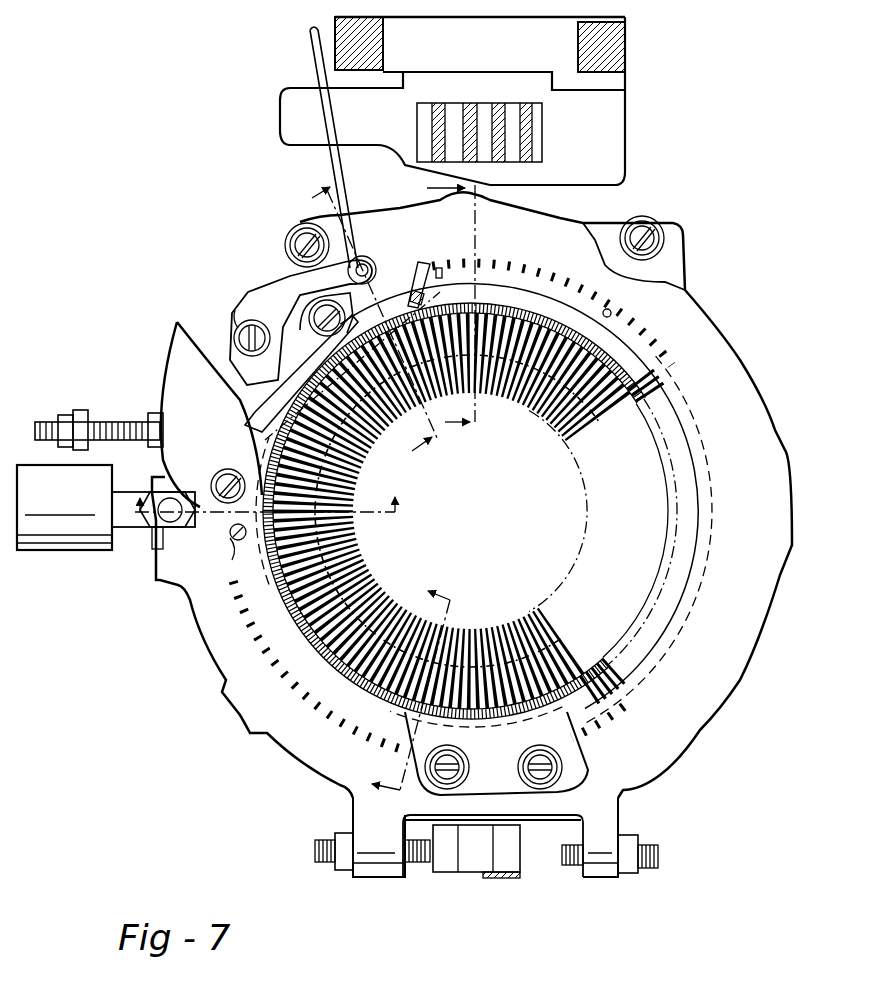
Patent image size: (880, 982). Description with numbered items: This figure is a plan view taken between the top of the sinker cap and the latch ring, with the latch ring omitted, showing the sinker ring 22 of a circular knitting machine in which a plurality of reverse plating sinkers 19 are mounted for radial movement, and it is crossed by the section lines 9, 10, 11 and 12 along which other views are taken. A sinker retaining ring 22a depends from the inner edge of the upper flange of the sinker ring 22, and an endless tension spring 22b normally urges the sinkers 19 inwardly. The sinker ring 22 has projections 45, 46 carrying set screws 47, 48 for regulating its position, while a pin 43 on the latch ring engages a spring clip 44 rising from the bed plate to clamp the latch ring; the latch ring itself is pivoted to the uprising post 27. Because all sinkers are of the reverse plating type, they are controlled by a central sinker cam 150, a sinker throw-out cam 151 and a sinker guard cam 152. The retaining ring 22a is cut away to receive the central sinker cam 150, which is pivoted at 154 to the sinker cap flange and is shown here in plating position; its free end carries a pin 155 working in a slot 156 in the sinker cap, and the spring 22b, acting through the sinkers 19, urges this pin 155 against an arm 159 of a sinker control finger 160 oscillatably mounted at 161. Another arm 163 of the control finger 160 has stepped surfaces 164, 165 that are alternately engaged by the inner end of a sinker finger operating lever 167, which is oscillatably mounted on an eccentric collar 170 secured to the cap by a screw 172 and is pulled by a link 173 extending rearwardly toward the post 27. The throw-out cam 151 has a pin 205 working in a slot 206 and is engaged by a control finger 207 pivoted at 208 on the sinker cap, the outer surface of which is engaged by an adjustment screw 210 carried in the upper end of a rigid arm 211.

The latch ring post 27 is at (628, 50).
The link 173 is at (340, 177).
The sinker ring 22 is at (218, 668).
The sinker retaining ring 22a is at (256, 606).
The endless tension spring 22b is at (292, 628).
The projection 46 is at (353, 806).
The projection 45 is at (620, 806).
The set screw 48 is at (314, 848).
The set screw 47 is at (660, 845).
The spring clip 44 is at (506, 878).
The pin 43 is at (494, 880).
The rigid arm 211 is at (82, 410).
The adjustment screw 210 is at (98, 420).
The control finger 207 is at (165, 373).
The pivot 208 is at (228, 470).
The slot 206 is at (230, 534).
The pin 205 is at (234, 548).
The sinker finger operating lever 167 is at (250, 298).
The screw 172 is at (236, 308).
The eccentric collar 170 is at (240, 336).
The stepped surface 164 is at (292, 330).
The pivot 161 is at (324, 305).
The sinker control finger 160 is at (360, 276).
The arm 159 is at (383, 300).
The stepped surface 165 is at (252, 398).
The slot 156 is at (424, 262).
The pin 155 is at (452, 272).
The section line 9- 9 is at (440, 315).
The bed plate 10 is at (363, 323).
The section line 11- 11 is at (271, 512).
The section line 12- 12 is at (399, 675).
The reverse plating sinkers 19 is at (562, 443).
The arm 163 is at (312, 408).
The central sinker cam 150 is at (527, 272).
The sinker throw-out cam 151 is at (243, 578).
The sinker guard cam 152 is at (352, 708).
The pivot 154 is at (612, 314).